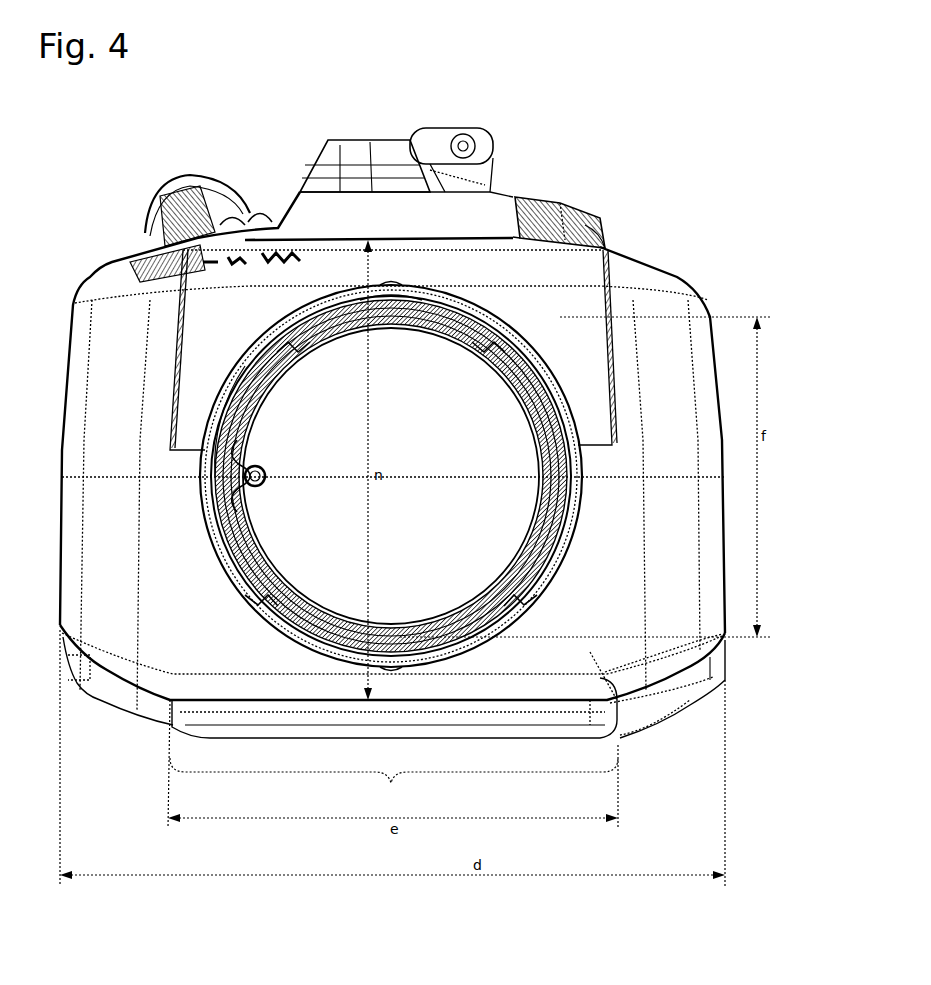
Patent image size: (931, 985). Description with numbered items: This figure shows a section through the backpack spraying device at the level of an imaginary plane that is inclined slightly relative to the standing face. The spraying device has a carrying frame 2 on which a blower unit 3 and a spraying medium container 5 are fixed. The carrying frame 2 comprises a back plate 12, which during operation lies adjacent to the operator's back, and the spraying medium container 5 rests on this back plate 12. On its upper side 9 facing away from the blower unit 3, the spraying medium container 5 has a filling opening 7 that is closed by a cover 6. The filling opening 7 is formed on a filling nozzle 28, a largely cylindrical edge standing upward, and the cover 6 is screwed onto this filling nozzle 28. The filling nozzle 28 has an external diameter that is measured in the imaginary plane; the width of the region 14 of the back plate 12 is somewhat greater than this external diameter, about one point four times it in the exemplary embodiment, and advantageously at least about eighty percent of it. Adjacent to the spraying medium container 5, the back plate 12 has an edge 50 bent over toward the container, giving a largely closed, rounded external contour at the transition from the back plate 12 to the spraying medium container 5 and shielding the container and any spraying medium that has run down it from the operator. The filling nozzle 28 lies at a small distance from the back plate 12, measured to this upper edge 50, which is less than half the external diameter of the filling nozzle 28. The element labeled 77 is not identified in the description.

The carrying frame 2 is at (653, 707).
The blower unit 3 is at (563, 205).
The spraying medium container 5 is at (670, 243).
The cover 6 is at (243, 582).
The filling opening 7 is at (313, 405).
The upper side 9 is at (608, 652).
The back plate 12 is at (252, 738).
The region 14 is at (394, 784).
The filling nozzle 28 is at (310, 318).
The edge 50 is at (703, 672).
The lens port mount 77 is at (405, 292).